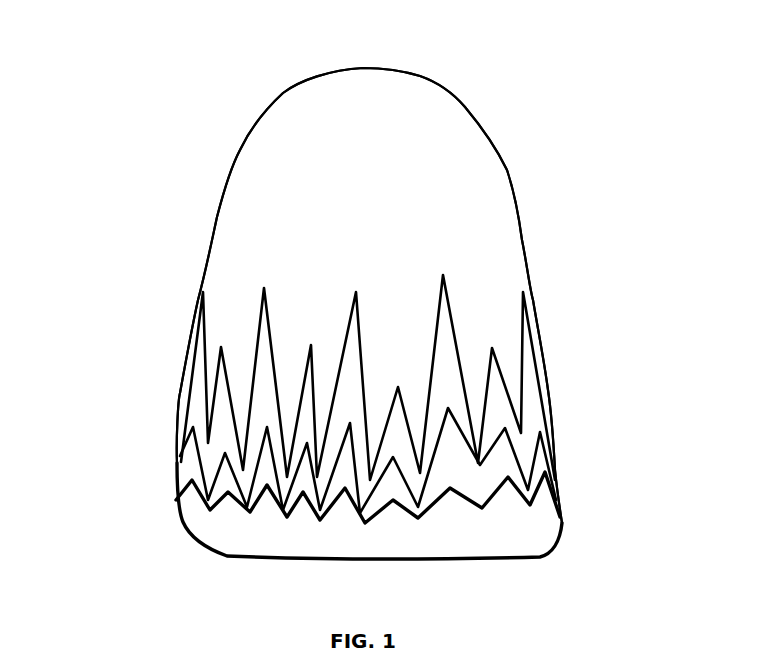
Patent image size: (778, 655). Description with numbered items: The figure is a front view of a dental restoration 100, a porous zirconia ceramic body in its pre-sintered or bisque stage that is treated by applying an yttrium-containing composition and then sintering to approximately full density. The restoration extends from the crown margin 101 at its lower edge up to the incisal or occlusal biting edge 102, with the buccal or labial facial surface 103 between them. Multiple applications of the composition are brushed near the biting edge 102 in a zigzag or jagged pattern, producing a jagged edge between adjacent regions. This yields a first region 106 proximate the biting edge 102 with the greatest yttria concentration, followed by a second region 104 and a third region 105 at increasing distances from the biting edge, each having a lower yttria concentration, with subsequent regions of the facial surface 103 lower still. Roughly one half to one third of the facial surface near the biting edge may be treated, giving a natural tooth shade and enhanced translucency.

The dental restoration 100 is at (195, 167).
The crown margin 101 is at (447, 117).
The biting edge 102 is at (253, 557).
The facial surface 103 is at (463, 210).
The second region 104 is at (197, 462).
The third region 105 is at (447, 368).
The first region 106 is at (222, 527).